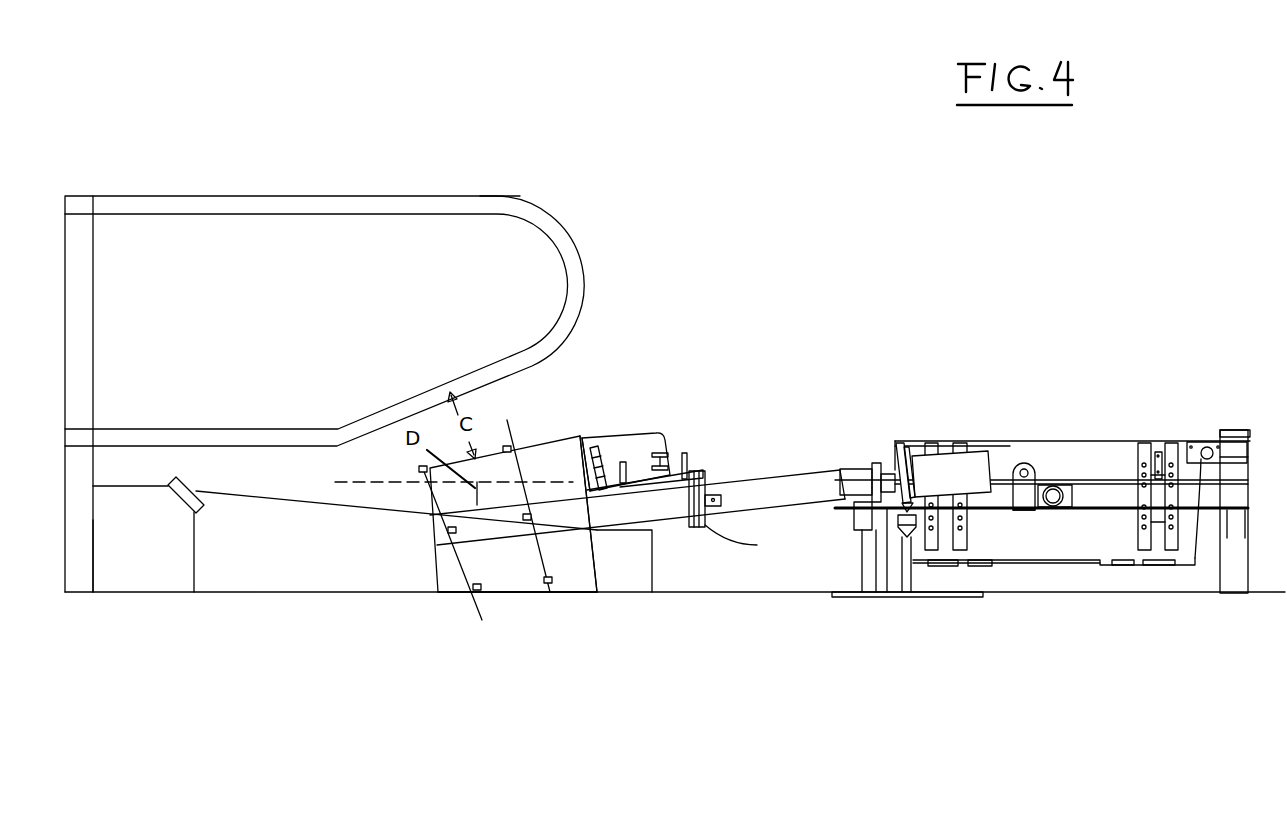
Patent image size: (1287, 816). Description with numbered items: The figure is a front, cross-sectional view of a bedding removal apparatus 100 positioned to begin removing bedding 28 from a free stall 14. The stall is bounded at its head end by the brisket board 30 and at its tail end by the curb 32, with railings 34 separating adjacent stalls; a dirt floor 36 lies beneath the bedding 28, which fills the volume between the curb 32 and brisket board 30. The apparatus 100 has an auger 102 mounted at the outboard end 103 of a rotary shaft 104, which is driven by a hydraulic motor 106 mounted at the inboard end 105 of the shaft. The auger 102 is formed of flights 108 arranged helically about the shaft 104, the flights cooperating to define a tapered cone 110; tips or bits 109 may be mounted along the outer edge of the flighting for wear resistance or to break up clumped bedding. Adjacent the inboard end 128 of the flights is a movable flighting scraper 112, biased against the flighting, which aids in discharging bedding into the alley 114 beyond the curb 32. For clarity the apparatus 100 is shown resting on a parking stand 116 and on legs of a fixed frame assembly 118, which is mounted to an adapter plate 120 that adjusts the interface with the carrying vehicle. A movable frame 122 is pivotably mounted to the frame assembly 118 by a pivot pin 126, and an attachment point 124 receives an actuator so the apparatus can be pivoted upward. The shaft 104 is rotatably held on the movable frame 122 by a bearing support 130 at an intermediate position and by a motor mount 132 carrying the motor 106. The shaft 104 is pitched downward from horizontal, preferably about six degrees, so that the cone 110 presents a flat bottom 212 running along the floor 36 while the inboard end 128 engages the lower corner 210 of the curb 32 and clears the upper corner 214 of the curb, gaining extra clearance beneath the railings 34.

The free stall 14 is at (215, 375).
The bedding 28 is at (233, 585).
The brisket board 30 is at (130, 573).
The curb 32 is at (633, 595).
The railings 34 is at (448, 198).
The floor 36 is at (327, 597).
The bedding removal apparatus 100 is at (988, 356).
The auger 102 is at (500, 582).
The outboard end 103 is at (440, 530).
The rotary shaft 104 is at (763, 490).
The inboard end 105 is at (862, 485).
The hydraulic motor 106 is at (935, 460).
The flights 108 is at (460, 580).
The bits 109 is at (420, 469).
The cone 110 is at (568, 436).
The flighting scraper 112 is at (633, 435).
The alley 114 is at (780, 598).
The parking stand 116 is at (927, 597).
The fixed frame assembly 118 is at (1103, 498).
The adapter plate 120 is at (1022, 548).
The movable frame 122 is at (1013, 478).
The attachment point 124 is at (1027, 457).
The pivot pin 126 is at (1053, 507).
The inboard end 128 is at (593, 547).
The bearing support 130 is at (757, 545).
The motor mount 132 is at (895, 505).
The lower corner 210 is at (597, 592).
The flat bottom 212 is at (443, 590).
The upper corner 214 is at (595, 530).